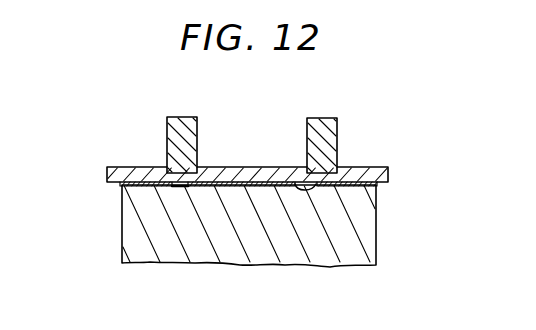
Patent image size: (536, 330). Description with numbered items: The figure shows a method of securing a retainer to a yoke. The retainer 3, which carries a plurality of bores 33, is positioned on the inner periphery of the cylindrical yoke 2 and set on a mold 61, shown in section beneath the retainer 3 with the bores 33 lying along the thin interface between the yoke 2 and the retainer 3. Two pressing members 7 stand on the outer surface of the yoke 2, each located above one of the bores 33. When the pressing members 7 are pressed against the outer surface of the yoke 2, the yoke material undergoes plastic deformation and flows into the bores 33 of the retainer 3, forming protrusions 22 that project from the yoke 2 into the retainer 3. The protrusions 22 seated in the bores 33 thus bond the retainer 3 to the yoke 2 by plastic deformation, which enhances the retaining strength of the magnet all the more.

The yoke 2 is at (390, 173).
The retainer 3 is at (376, 215).
The pressing member 7 is at (190, 133).
The protrusion 22 is at (186, 187).
The bore 33 is at (297, 183).
The mold 61 is at (243, 232).